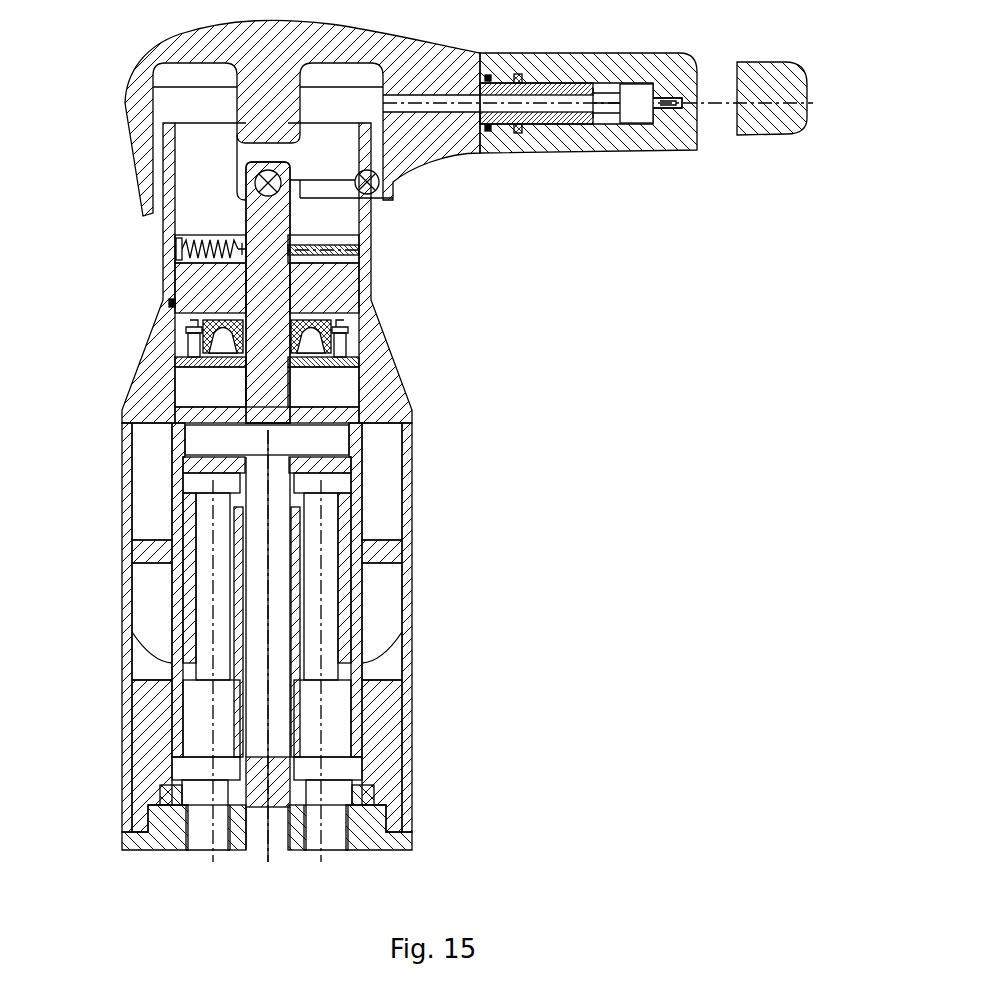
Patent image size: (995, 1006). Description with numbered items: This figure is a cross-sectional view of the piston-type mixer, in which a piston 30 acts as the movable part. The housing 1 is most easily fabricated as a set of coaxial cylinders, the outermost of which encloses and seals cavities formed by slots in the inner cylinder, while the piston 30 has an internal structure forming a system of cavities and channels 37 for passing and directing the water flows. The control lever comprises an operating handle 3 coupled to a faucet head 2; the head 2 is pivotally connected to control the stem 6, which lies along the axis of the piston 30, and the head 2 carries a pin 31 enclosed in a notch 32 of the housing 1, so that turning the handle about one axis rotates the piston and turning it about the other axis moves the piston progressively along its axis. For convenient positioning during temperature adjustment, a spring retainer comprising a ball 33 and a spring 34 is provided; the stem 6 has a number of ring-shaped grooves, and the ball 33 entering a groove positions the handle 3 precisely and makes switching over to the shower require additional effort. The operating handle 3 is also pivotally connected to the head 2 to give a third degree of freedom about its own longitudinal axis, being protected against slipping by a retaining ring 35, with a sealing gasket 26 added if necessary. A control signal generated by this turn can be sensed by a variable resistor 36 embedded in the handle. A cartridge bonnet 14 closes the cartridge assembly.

The housing 1 is at (150, 400).
The faucet head 2 is at (210, 47).
The operating handle 3 is at (765, 72).
The stem 6 is at (187, 277).
The cartridge bonnet 14 is at (150, 815).
The sealing gasket 26 is at (490, 77).
The piston 30 is at (310, 417).
The pin 31 is at (385, 198).
The notch 32 is at (337, 185).
The ball 33 is at (210, 228).
The spring 34 is at (178, 250).
The retaining ring 35 is at (530, 62).
The variable resistor 36 is at (632, 118).
The cavities and channels 37 is at (323, 620).